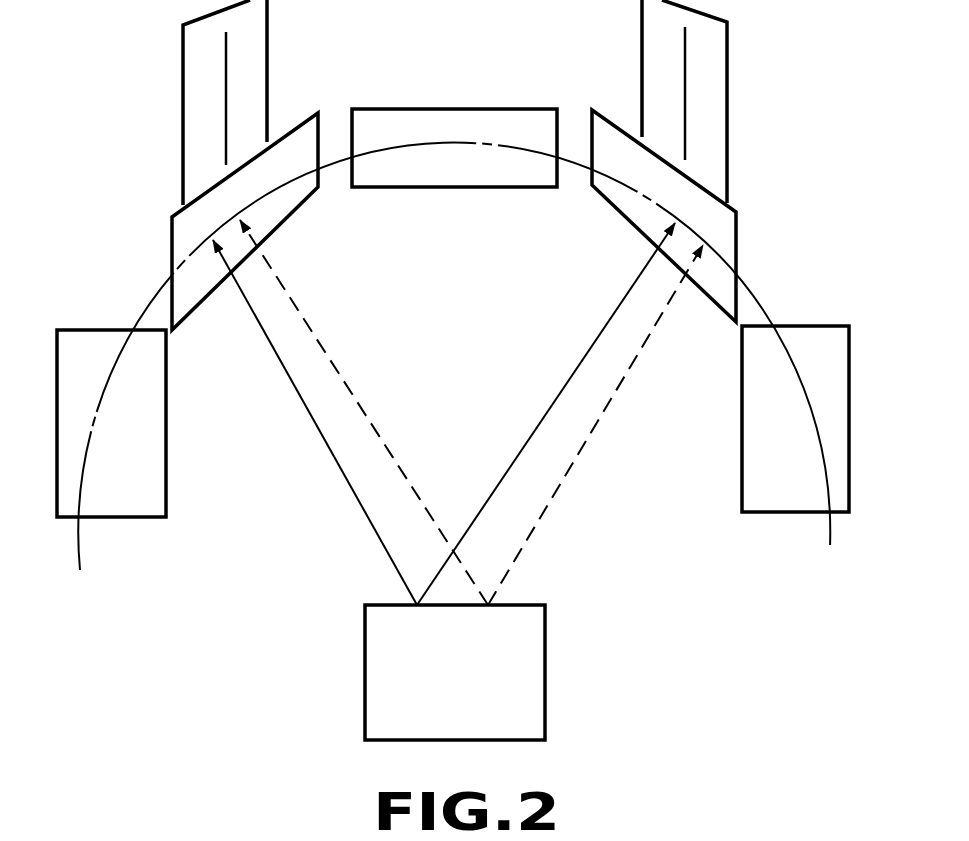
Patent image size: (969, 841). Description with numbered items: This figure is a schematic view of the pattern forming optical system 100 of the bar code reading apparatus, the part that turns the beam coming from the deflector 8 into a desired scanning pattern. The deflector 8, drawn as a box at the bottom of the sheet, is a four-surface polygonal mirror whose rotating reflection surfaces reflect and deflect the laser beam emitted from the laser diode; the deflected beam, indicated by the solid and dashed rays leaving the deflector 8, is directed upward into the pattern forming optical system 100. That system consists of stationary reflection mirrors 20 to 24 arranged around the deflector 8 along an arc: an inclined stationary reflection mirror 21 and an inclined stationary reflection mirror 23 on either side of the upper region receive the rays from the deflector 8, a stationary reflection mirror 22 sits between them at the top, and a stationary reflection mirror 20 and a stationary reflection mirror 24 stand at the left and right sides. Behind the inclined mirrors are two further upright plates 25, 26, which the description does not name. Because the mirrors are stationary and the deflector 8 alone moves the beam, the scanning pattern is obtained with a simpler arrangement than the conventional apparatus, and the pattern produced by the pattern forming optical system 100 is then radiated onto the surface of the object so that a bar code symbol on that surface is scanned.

The pattern forming optical system 100 is at (487, 292).
The left plate 25 is at (267, 48).
The right plate 26 is at (727, 85).
The stationary reflection mirror 21 is at (302, 205).
The stationary reflection mirror 23 is at (623, 215).
The stationary reflection mirror 22 is at (420, 187).
The stationary reflection mirror 20 is at (166, 455).
The stationary reflection mirror 24 is at (742, 455).
The deflector 8 is at (545, 660).